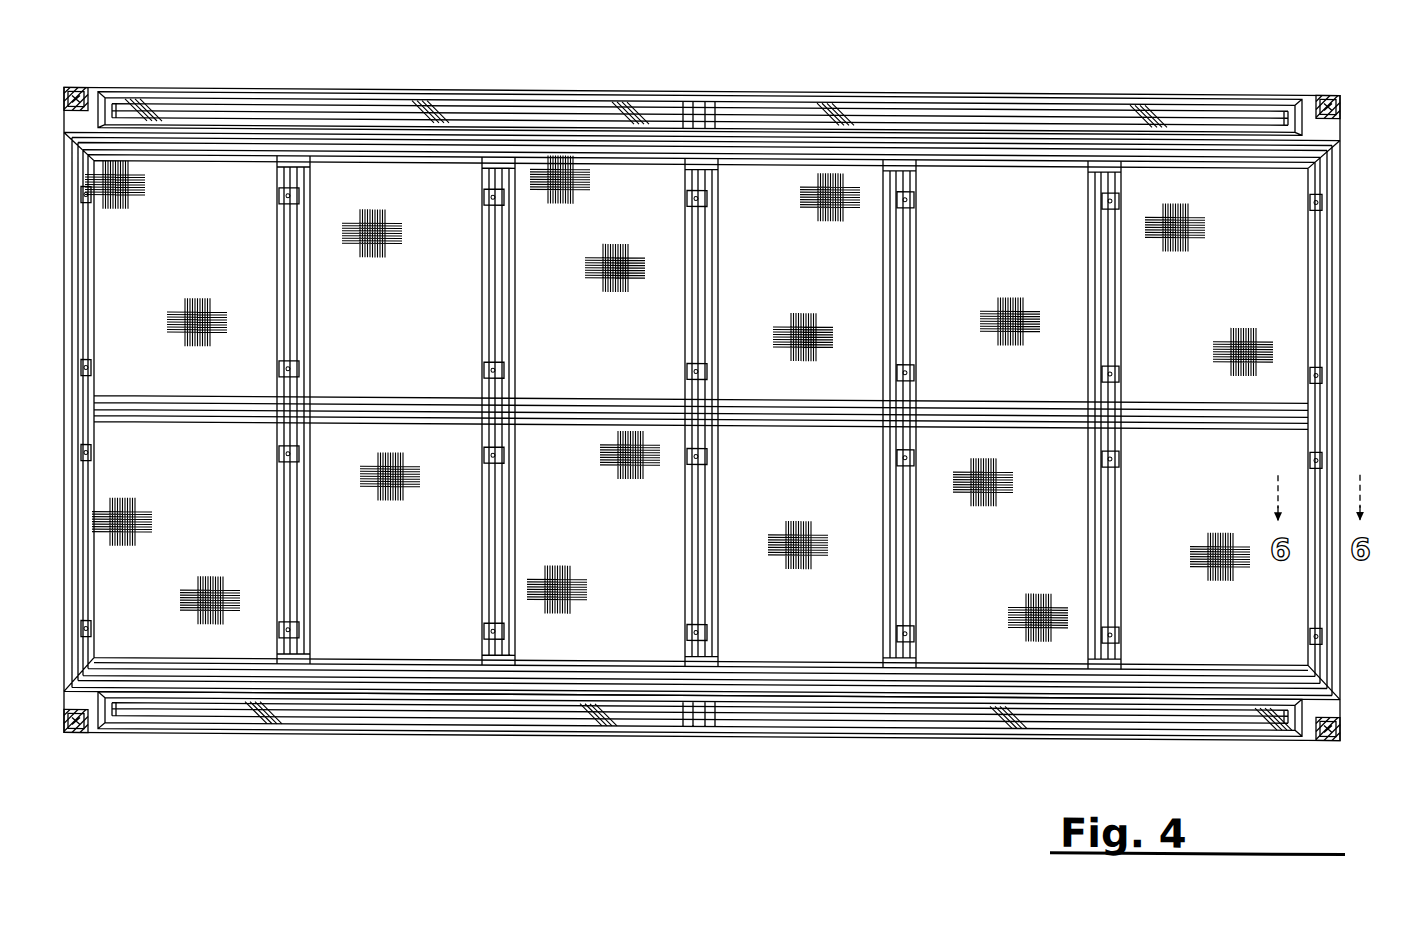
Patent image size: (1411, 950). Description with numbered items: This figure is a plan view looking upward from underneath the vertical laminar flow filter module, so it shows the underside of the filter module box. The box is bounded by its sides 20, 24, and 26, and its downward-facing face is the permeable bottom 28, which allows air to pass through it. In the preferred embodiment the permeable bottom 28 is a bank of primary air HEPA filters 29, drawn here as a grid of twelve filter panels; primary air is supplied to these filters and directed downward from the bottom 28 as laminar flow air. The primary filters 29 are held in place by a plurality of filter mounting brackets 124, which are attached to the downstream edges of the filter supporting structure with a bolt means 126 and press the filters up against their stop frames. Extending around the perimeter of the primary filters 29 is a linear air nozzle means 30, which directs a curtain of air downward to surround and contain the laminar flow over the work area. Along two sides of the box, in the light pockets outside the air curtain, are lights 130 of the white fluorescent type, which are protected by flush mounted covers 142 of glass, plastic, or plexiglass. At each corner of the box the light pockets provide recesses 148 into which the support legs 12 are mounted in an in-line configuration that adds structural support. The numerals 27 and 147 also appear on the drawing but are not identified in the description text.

The legs 12 is at (75, 86).
The side 20 is at (66, 378).
The side 24 is at (1340, 401).
The side 26 is at (540, 736).
The top rail 27 is at (663, 82).
The permeable bottom 28 is at (975, 184).
The primary air HEPA filters 29 is at (226, 279).
The linear air nozzle means 30 is at (1323, 189).
The filter mounting brackets 124 is at (300, 191).
The bolt means 126 is at (284, 193).
The lights 130 is at (207, 119).
The covers 142 is at (1183, 104).
The rail splice 147 is at (580, 109).
The recesses 148 is at (66, 98).